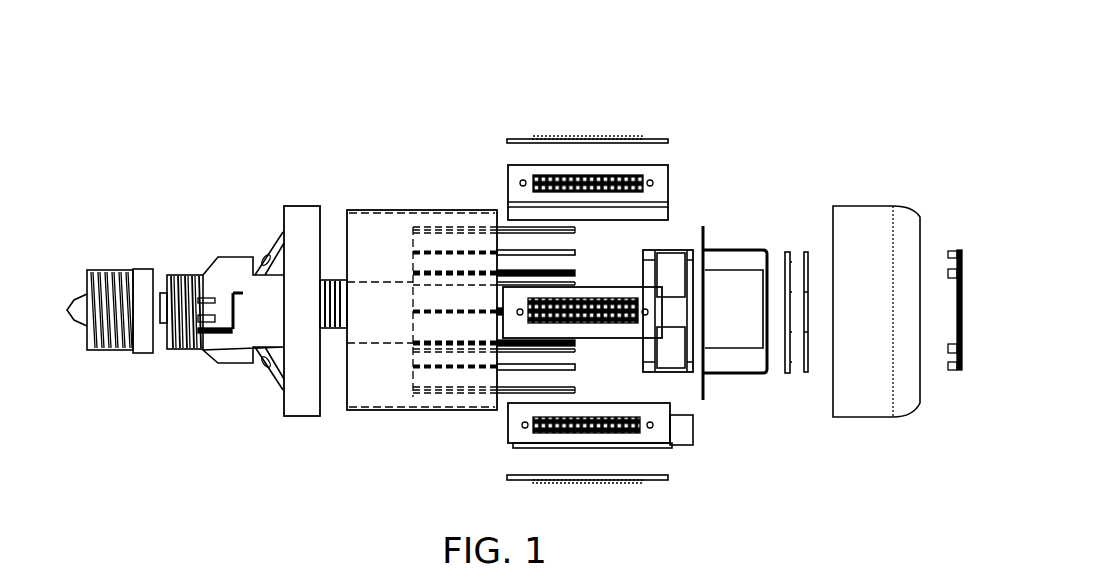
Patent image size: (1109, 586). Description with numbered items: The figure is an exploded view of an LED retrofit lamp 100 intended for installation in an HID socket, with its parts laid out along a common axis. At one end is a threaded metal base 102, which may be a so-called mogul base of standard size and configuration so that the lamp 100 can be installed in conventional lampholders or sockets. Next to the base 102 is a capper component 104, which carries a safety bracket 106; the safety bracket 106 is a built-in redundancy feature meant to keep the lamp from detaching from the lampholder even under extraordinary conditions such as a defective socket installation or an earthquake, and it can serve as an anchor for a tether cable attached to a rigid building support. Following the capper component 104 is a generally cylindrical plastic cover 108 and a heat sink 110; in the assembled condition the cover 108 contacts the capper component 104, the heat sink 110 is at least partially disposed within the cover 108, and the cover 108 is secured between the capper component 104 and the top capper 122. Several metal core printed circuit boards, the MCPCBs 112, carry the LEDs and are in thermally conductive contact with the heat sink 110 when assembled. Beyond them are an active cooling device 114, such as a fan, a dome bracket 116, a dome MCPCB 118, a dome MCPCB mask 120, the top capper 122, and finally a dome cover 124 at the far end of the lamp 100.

The LED retrofit lamp 100 is at (526, 253).
The metal base 102 is at (143, 268).
The capper component 104 is at (260, 228).
The safety bracket 106 is at (212, 342).
The plastic cover 108 is at (390, 412).
The heat sink 110 is at (505, 395).
The MCPCBs 112 is at (670, 178).
The active cooling device 114 is at (677, 247).
The dome bracket 116 is at (743, 247).
The dome MCPCB 118 is at (787, 375).
The dome MCPCB mask 120 is at (807, 248).
The top capper 122 is at (855, 418).
The dome cover 124 is at (960, 355).